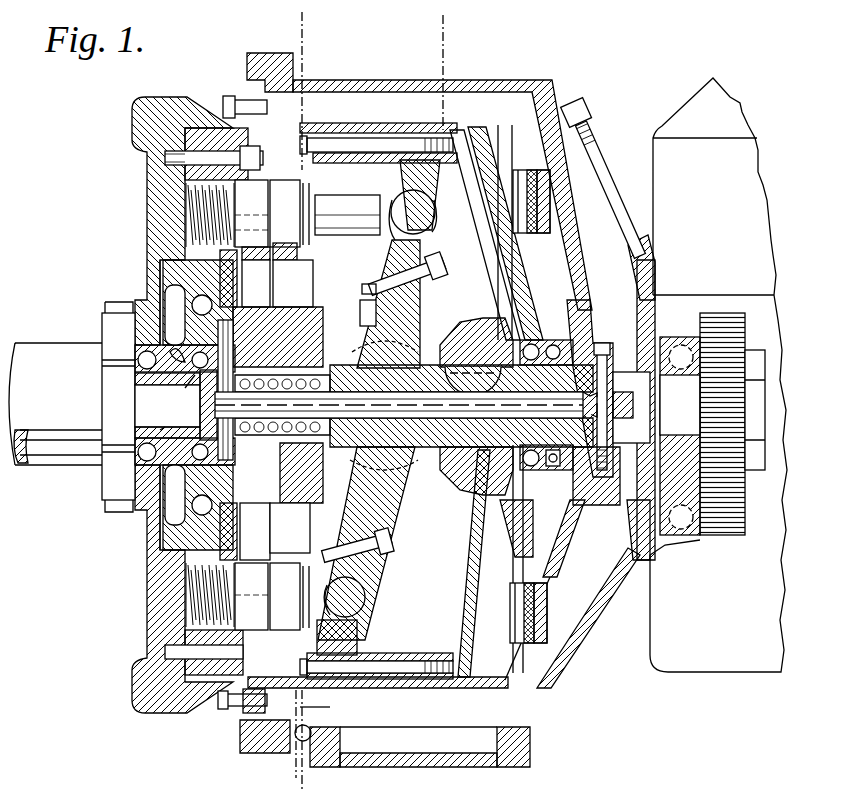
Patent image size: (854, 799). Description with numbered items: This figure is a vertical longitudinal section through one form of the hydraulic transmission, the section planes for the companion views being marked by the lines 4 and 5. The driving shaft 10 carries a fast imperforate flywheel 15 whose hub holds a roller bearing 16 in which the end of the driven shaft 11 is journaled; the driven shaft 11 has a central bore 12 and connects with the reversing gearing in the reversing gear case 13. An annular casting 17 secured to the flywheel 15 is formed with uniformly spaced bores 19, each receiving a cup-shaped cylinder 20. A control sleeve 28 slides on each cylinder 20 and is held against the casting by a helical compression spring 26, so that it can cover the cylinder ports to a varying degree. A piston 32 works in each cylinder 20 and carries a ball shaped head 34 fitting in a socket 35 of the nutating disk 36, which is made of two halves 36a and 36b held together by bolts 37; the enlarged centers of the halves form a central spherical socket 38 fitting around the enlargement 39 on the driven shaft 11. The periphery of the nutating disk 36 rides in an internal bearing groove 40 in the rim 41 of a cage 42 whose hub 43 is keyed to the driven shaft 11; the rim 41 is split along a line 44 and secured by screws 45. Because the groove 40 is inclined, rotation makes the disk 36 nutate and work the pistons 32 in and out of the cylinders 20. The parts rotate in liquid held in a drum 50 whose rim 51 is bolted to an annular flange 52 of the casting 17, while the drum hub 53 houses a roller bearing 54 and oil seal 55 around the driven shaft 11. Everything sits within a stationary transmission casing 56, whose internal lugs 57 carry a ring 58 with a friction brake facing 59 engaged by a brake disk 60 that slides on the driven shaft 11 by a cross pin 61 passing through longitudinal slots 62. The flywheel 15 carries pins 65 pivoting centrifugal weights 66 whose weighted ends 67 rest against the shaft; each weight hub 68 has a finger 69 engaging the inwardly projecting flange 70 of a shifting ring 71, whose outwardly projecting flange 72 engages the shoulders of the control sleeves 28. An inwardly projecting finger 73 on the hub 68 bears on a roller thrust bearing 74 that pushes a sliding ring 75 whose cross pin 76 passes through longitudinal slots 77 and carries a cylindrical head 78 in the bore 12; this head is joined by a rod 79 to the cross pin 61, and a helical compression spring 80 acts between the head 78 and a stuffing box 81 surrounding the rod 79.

The section line 4 is at (312, 28).
The section line 5 is at (426, 34).
The driving shaft 10 is at (42, 348).
The driven shaft 11 is at (470, 462).
The central bore 12 is at (151, 419).
The reversing gear case 13 is at (730, 675).
The flywheel 15 is at (132, 127).
The roller bearing 16 is at (133, 448).
The annular casting 17 is at (193, 130).
The bores 19 is at (289, 405).
The cylinder 20 is at (172, 196).
The helical compression spring 26 is at (200, 222).
The control sleeve 28 is at (251, 405).
The piston 32 is at (347, 215).
The ball shaped head 34 is at (425, 230).
The socket 35 is at (395, 236).
The nutating disk 36 is at (428, 296).
The disk half 36a is at (378, 282).
The disk half 36b is at (376, 306).
The bolts 37 is at (392, 550).
The central spherical socket 38 is at (360, 338).
The enlargement 39 is at (374, 543).
The internal bearing groove 40 is at (402, 173).
The rim 41 is at (380, 135).
The cage 42 is at (472, 200).
The hub 43 is at (458, 360).
The split line 44 is at (458, 145).
The screws 45 is at (330, 145).
The drum 50 is at (425, 690).
The rim 51 is at (240, 715).
The annular flange 52 is at (233, 715).
The hub 53 is at (545, 336).
The roller bearing 54 is at (530, 470).
The oil seal 55 is at (590, 340).
The transmission casing 56 is at (583, 662).
The internal lugs 57 is at (505, 137).
The ring 58 is at (515, 168).
The friction brake facing 59 is at (550, 192).
The brake disk 60 is at (552, 230).
The cross pin 61 is at (595, 480).
The longitudinal slots 62 is at (628, 380).
The pins 65 is at (190, 300).
The centrifugal weight 66 is at (195, 292).
The weighted end 67 is at (305, 312).
The hub 68 is at (165, 290).
The finger 69 is at (255, 410).
The inwardly projecting flange 70 is at (222, 546).
The shifting ring 71 is at (222, 264).
The outwardly projecting flange 72 is at (269, 259).
The inwardly projecting finger 73 is at (180, 357).
The roller thrust bearing 74 is at (167, 405).
The ring 75 is at (185, 393).
The cross pin 76 is at (233, 356).
The longitudinal slots 77 is at (282, 409).
The cylindrical head 78 is at (200, 418).
The rod 79 is at (406, 405).
The helical compression spring 80 is at (302, 505).
The stuffing box 81 is at (328, 448).